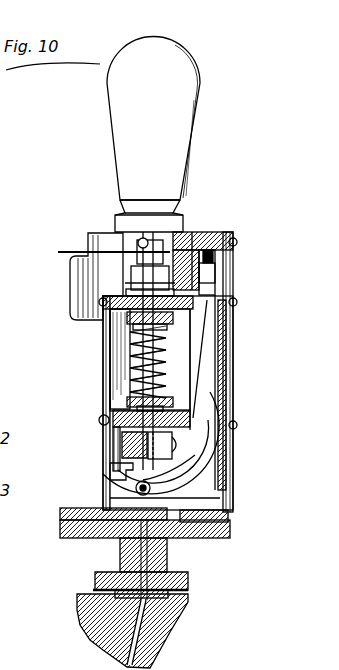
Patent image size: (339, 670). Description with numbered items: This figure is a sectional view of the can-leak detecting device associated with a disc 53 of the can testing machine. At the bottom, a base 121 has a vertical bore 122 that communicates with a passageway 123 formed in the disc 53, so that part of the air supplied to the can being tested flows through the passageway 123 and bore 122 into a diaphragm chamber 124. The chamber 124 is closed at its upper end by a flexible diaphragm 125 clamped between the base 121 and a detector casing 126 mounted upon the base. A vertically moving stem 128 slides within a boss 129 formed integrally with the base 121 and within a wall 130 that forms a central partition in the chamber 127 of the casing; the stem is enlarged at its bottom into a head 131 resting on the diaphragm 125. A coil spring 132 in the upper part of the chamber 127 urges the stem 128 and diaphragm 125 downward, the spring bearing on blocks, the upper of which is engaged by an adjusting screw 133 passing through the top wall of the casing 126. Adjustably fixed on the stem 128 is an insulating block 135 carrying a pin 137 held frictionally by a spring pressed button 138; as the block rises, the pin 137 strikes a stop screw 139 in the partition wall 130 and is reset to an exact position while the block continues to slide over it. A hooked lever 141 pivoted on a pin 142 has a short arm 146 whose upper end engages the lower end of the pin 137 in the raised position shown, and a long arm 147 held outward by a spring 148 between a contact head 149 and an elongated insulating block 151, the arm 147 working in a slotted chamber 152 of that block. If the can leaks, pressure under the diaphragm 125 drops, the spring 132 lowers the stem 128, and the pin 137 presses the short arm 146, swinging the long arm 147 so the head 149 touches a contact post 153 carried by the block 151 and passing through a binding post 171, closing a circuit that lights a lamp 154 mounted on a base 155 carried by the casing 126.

The lamp 154 is at (153, 135).
The binding post 171 is at (190, 231).
The contact post 153 is at (213, 230).
The insulating block 151 is at (228, 232).
The contact head 149 is at (215, 254).
The spring 148 is at (200, 277).
The chamber 152 is at (228, 311).
The coil spring 132 is at (127, 343).
The long arm 147 is at (210, 356).
The chamber 127 is at (113, 352).
The stop screw 139 is at (107, 413).
The wall 130 is at (193, 417).
The pin 137 is at (108, 434).
The spring pressed button 138 is at (133, 448).
The block 135 is at (167, 437).
The short arm 146 is at (117, 474).
The pin 142 is at (137, 487).
The stem 128 is at (157, 460).
The hooked lever 141 is at (177, 478).
The boss 129 is at (180, 500).
The detector casing 126 is at (63, 512).
The flexible diaphragm 125 is at (227, 516).
The diaphragm chamber 124 is at (157, 530).
The head 131 is at (120, 538).
The base 121 is at (160, 563).
The vertical bore 122 is at (185, 588).
The passageway 123 is at (143, 620).
The disc 53 is at (170, 632).
The adjusting screw 133 is at (140, 262).
The base 155 is at (80, 288).